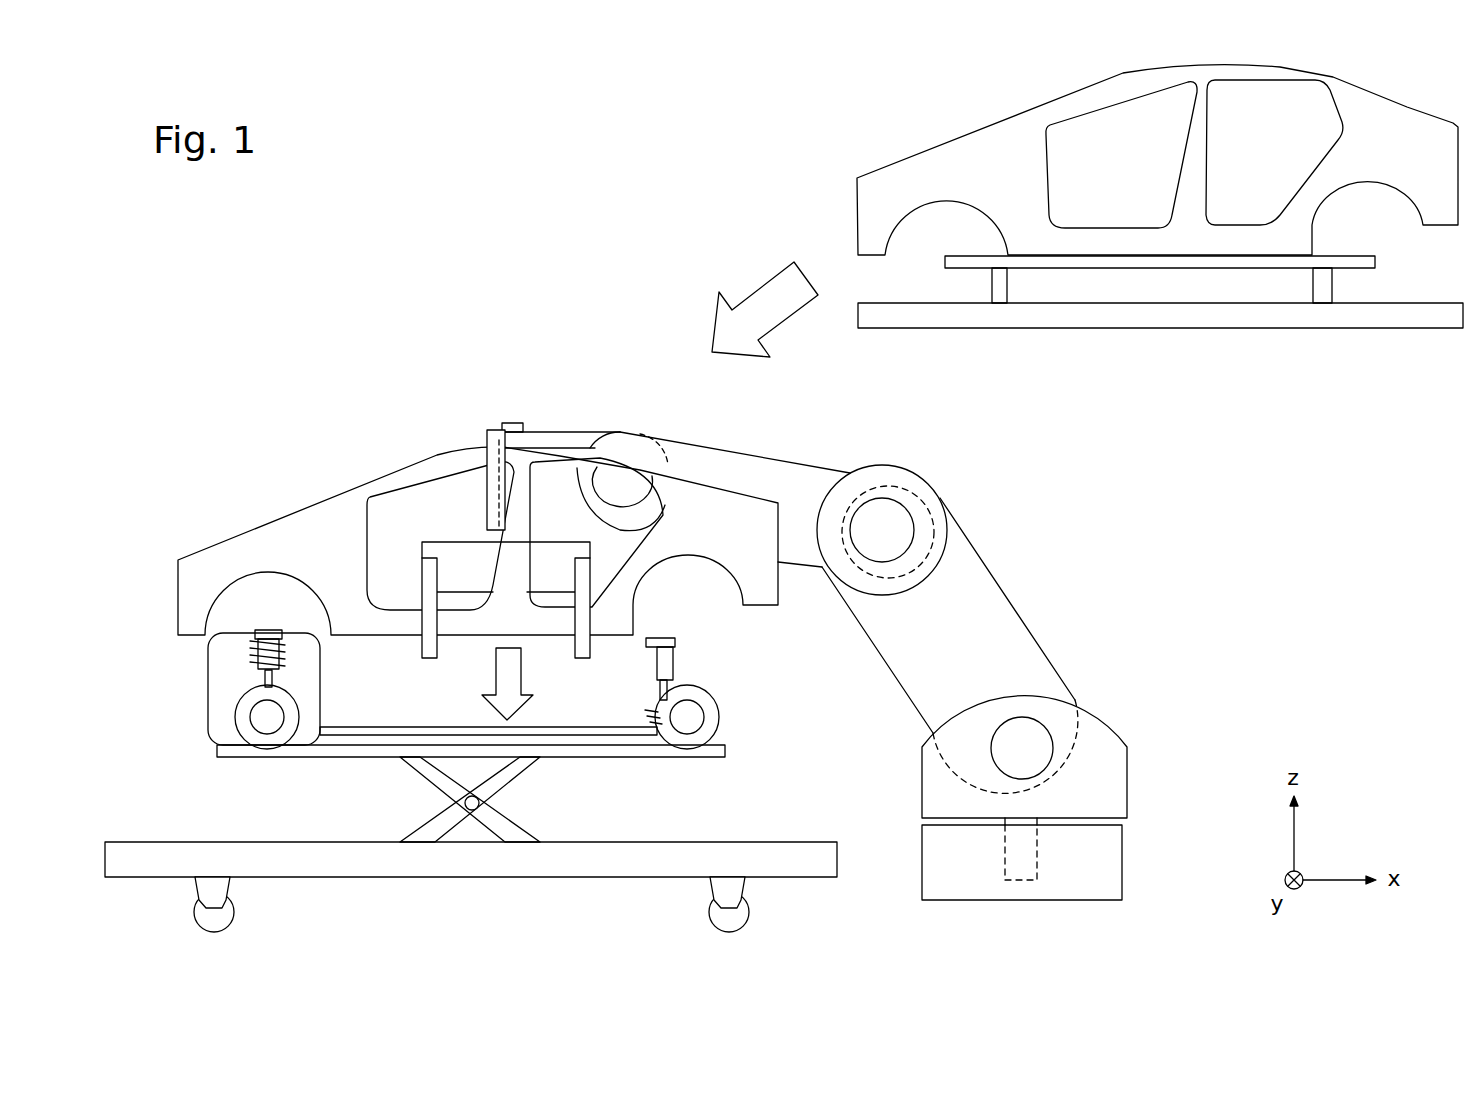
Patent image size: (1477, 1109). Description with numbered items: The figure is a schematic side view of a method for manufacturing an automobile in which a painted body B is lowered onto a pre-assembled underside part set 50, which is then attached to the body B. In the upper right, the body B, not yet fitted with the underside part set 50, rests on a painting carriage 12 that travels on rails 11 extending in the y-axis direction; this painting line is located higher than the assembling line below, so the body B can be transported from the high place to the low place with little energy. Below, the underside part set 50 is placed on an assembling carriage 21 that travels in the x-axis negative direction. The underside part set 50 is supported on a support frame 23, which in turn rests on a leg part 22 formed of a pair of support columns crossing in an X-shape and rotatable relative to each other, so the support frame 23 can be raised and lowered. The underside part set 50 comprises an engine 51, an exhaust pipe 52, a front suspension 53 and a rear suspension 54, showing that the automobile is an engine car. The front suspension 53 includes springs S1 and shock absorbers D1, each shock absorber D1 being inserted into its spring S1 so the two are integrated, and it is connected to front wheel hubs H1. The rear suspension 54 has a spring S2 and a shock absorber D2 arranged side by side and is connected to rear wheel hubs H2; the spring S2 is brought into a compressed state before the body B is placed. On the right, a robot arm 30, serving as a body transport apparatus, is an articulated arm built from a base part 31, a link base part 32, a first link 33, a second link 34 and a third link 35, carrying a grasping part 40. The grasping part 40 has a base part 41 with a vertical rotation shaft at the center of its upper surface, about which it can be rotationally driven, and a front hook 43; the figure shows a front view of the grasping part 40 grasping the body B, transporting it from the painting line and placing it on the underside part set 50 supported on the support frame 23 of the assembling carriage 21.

The body B is at (888, 173).
The rails 11 is at (1007, 287).
The painting carriage 12 is at (1377, 262).
The assembling carriage 21 is at (472, 868).
The leg part 22 is at (523, 772).
The support frame 23 is at (723, 753).
The robot arm 30 is at (836, 630).
The base part 31 is at (1117, 862).
The link base part 32 is at (1117, 782).
The first link 33 is at (995, 590).
The second link 34 is at (768, 460).
The third link 35 is at (551, 430).
The grasping part 40 is at (479, 566).
The base part 41 is at (473, 548).
The front hook 43 is at (427, 573).
The underside part set 50 is at (489, 693).
The engine 51 is at (212, 727).
The exhaust pipe 52 is at (433, 727).
The front suspension 53 is at (252, 677).
The rear suspension 54 is at (647, 696).
The spring S1 is at (260, 652).
The spring S2 is at (653, 718).
The shock absorber D1 is at (283, 660).
The shock absorber D2 is at (663, 665).
The front wheel hubs H1 is at (283, 713).
The rear wheel hubs H2 is at (703, 717).